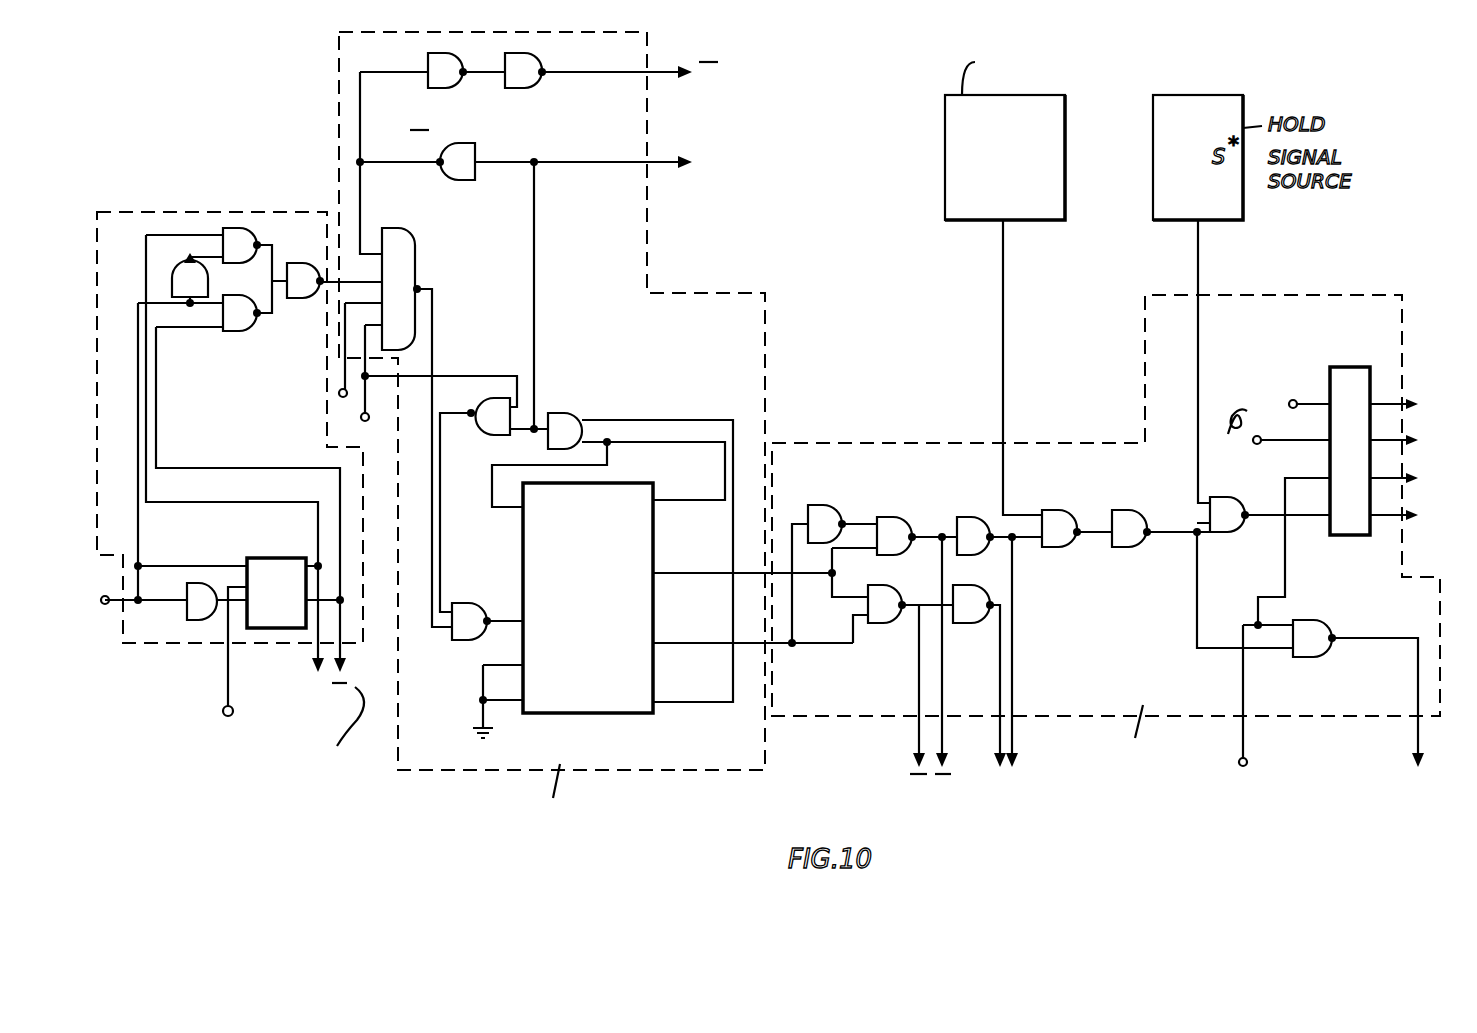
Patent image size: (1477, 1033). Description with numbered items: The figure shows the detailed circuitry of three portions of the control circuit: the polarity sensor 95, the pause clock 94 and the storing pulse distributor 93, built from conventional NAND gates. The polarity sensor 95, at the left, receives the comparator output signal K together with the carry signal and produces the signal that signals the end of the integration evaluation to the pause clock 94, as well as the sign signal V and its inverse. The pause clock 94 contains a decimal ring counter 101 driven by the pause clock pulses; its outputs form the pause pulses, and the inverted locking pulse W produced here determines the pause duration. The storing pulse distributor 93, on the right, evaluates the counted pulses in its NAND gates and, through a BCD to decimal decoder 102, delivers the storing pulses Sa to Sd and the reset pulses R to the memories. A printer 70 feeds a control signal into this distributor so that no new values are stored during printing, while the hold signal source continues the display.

The polarity sensor 95 is at (307, 345).
The pause clock 94 is at (677, 293).
The ring counter 101 is at (587, 713).
The printer 70 is at (1005, 135).
The storing pulse distributor 93 is at (1112, 556).
The BCD to decimal decoder 102 is at (1345, 531).